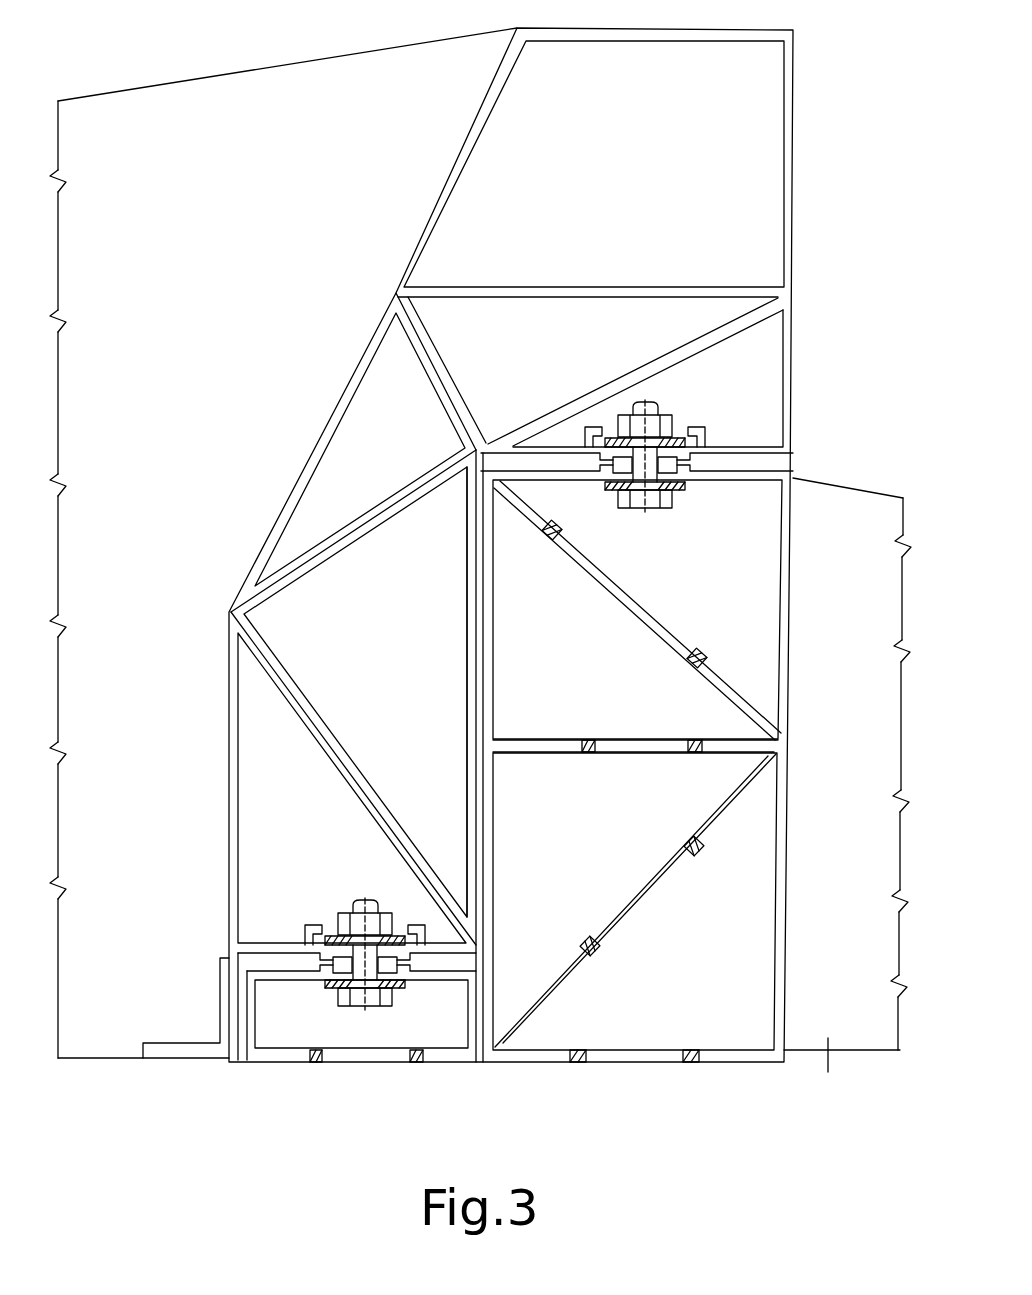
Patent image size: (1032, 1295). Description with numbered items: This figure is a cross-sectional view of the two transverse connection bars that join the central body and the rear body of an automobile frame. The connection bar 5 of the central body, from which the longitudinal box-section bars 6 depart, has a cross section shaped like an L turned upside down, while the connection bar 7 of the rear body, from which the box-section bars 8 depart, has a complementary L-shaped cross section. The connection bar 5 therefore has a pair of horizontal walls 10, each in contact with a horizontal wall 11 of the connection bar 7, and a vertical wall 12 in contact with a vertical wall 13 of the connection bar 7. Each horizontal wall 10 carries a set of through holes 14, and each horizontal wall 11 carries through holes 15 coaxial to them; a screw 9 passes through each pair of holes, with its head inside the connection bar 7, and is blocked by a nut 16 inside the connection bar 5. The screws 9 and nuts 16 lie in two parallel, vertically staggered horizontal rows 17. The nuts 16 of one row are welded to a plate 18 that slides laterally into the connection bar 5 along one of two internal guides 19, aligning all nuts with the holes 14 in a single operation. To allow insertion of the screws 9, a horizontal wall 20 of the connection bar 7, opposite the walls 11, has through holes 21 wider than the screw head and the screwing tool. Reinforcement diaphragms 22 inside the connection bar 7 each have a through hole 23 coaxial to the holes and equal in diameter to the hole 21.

The connection bar 5 is at (838, 186).
The box-section bars 6 is at (204, 93).
The connection bar 7 is at (627, 1097).
The box-section bars 8 is at (480, 603).
The screws 9 is at (658, 508).
The horizontal walls 10 is at (774, 467).
The horizontal wall 11 is at (750, 464).
The vertical wall 12 is at (486, 800).
The vertical wall 13 is at (468, 665).
The through holes 14 is at (613, 438).
The through holes 15 is at (683, 482).
The nut 16 is at (672, 423).
The horizontal rows 17 is at (664, 385).
The plate 18 is at (690, 427).
The guides 19 is at (582, 433).
The horizontal wall 20 is at (536, 1072).
The through holes 21 is at (348, 1062).
The reinforcement diaphragms 22 is at (552, 530).
The through hole 23 is at (655, 618).